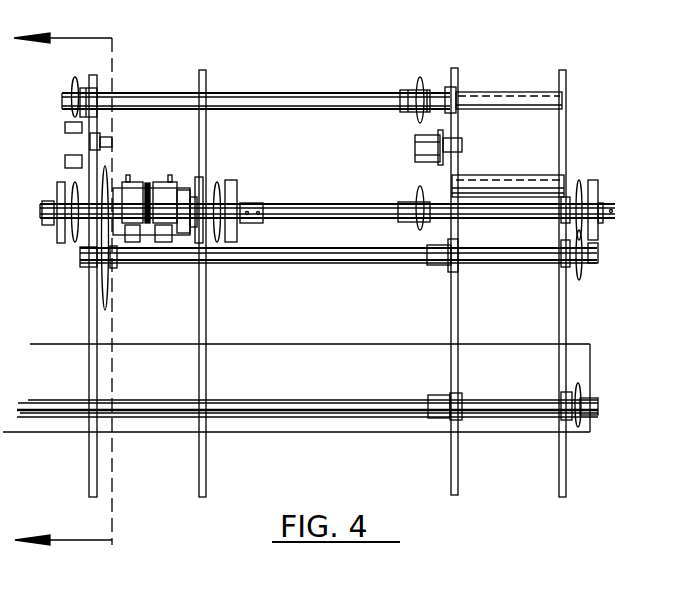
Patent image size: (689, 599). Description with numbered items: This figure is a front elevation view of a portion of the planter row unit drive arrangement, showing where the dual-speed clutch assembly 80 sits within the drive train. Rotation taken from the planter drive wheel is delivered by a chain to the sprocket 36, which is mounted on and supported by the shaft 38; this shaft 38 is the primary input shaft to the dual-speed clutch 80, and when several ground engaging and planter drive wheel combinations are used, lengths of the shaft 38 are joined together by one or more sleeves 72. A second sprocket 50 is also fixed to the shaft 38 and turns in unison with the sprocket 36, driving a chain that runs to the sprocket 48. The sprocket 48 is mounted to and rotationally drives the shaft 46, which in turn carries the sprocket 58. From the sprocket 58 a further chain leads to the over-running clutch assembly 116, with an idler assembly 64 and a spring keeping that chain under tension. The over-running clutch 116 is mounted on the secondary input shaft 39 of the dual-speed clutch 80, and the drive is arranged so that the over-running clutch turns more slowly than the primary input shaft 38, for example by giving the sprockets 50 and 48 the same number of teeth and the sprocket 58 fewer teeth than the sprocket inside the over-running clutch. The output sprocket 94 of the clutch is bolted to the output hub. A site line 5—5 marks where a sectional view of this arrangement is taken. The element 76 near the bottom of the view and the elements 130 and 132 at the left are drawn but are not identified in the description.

The site line 5 is at (74, 280).
The sprocket 36 is at (229, 181).
The shaft 38 is at (609, 205).
The secondary input shaft 39 is at (46, 207).
The shaft 46 is at (262, 100).
The sprocket 48 is at (420, 80).
The second sprocket 50 is at (412, 195).
The sprocket 58 is at (73, 80).
The idler assembly 64 is at (68, 160).
The sleeve 72 is at (255, 205).
The lower shaft 76 is at (325, 415).
The dual-speed clutch assembly 80 is at (151, 160).
The output sprocket 94 is at (104, 190).
The over-running clutch assembly 116 is at (62, 243).
The frame 130 is at (92, 377).
The frame member 132 is at (92, 450).